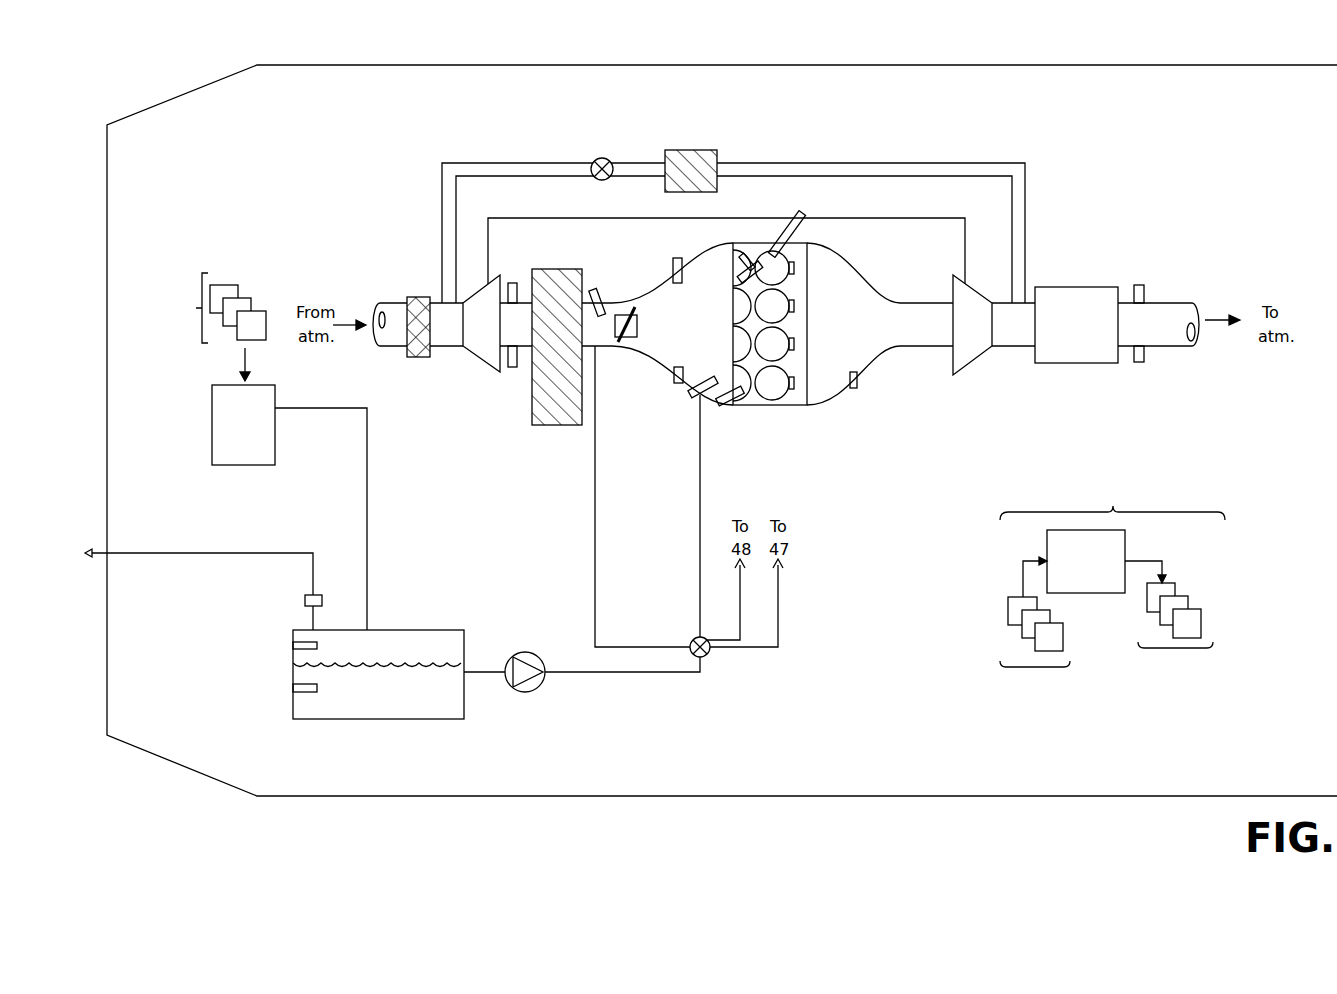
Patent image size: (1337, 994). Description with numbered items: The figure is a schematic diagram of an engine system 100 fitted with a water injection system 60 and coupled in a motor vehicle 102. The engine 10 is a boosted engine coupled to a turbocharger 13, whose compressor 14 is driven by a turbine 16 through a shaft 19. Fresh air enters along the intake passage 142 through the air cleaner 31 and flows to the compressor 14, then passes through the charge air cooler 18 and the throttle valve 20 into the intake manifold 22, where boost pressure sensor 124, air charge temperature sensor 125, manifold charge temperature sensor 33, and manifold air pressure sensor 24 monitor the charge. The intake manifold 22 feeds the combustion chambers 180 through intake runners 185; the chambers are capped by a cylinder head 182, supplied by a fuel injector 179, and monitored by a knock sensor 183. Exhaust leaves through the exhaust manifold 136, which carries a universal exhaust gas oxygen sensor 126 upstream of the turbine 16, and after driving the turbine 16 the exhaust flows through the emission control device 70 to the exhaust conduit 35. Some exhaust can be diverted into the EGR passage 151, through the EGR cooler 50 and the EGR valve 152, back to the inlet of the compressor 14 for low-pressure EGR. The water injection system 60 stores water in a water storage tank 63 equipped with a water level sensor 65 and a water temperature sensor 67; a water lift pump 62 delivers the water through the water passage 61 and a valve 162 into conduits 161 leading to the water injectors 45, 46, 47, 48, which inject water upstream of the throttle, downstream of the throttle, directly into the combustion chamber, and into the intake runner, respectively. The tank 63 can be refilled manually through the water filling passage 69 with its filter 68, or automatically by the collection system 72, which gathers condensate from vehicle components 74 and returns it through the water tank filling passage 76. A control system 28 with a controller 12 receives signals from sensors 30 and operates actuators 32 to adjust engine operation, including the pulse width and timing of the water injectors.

The engine 10 is at (748, 232).
The controller 12 is at (1086, 561).
The turbocharger 13 is at (523, 208).
The compressor 14 is at (497, 323).
The turbine 16 is at (994, 325).
The charge air cooler 18 is at (560, 269).
The shaft 19 is at (893, 221).
The throttle valve 20 is at (638, 326).
The intake manifold 22 is at (657, 324).
The manifold air pressure sensor 24 is at (673, 370).
The control system 28 is at (1112, 488).
The sensors 30 is at (1037, 637).
The air cleaner 31 is at (414, 297).
The actuators 32 is at (1175, 629).
The manifold charge temperature sensor 33 is at (672, 270).
The exhaust conduit 35 is at (1184, 303).
The water injector 45 is at (597, 290).
The water injector 46 is at (690, 396).
The water injector 47 is at (740, 283).
The water injector 48 is at (718, 404).
The EGR cooler 50 is at (702, 150).
The water injection system 60 is at (503, 751).
The water passage 61 is at (650, 672).
The water lift pump 62 is at (540, 658).
The water storage tank 63 is at (440, 630).
The water level sensor 65 is at (293, 650).
The water temperature sensor 67 is at (293, 692).
The filter 68 is at (322, 603).
The water filling passage 69 is at (236, 553).
The emission control device 70 is at (1065, 287).
The collection system 72 is at (243, 425).
The vehicle components 74 is at (217, 327).
The water tank filling passage 76 is at (367, 516).
The engine system 100 is at (1108, 120).
The motor vehicle 102 is at (735, 65).
The boost pressure sensor 124 is at (512, 367).
The air charge temperature sensor 125 is at (512, 283).
The universal exhaust gas oxygen sensor 126 is at (857, 380).
The exhaust manifold 136 is at (880, 324).
The intake passage 142 is at (394, 347).
The EGR passage 151 is at (805, 176).
The EGR valve 152 is at (609, 163).
The conduits 161 is at (596, 530).
The valve 162 is at (712, 655).
The fuel injector 179 is at (798, 222).
The combustion chambers 180 is at (807, 257).
The cylinder head 182 is at (808, 325).
The knock sensor 183 is at (807, 398).
The intake runners 185 is at (742, 258).